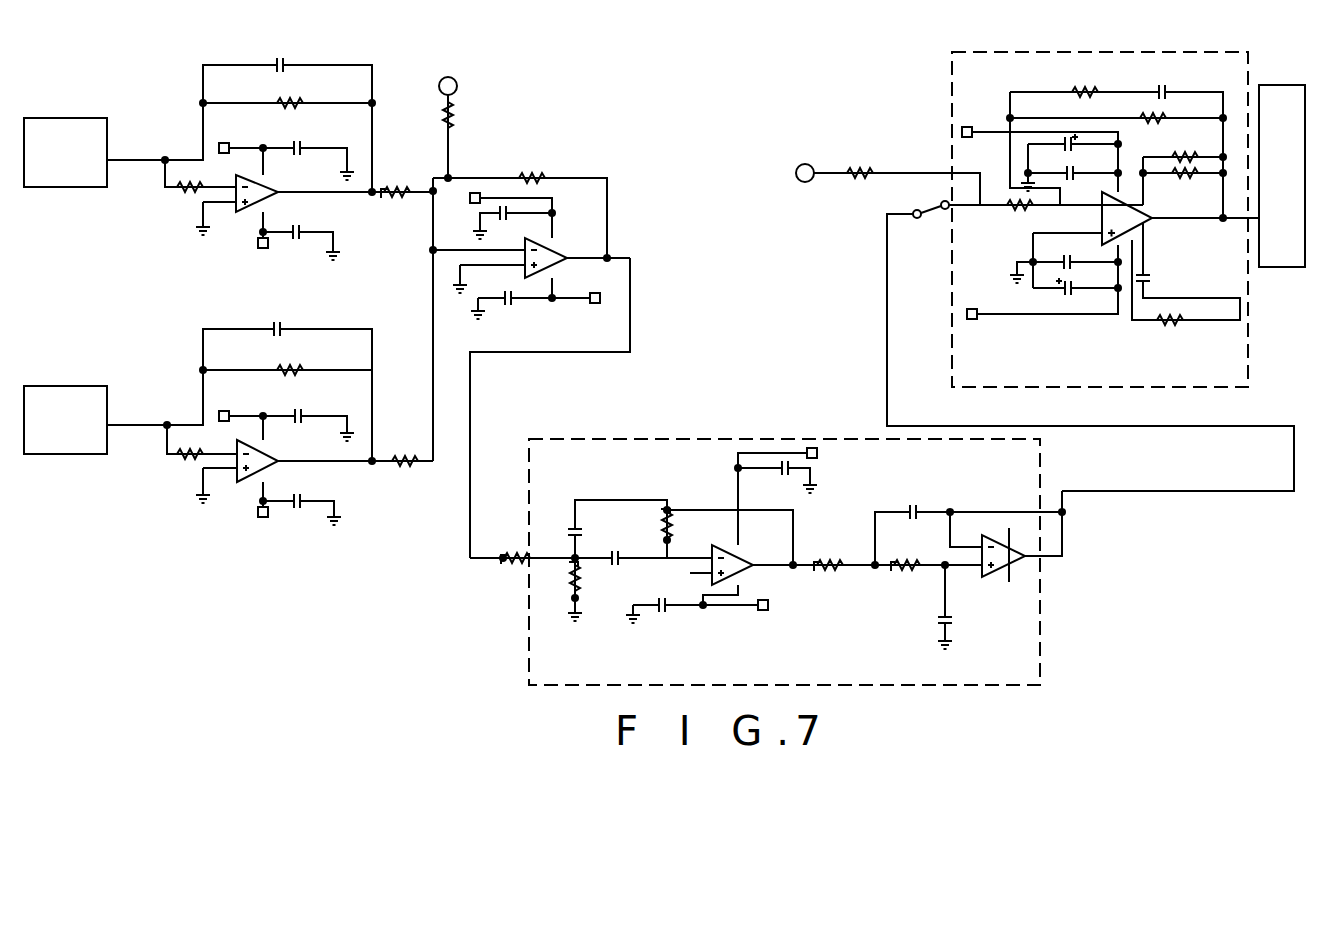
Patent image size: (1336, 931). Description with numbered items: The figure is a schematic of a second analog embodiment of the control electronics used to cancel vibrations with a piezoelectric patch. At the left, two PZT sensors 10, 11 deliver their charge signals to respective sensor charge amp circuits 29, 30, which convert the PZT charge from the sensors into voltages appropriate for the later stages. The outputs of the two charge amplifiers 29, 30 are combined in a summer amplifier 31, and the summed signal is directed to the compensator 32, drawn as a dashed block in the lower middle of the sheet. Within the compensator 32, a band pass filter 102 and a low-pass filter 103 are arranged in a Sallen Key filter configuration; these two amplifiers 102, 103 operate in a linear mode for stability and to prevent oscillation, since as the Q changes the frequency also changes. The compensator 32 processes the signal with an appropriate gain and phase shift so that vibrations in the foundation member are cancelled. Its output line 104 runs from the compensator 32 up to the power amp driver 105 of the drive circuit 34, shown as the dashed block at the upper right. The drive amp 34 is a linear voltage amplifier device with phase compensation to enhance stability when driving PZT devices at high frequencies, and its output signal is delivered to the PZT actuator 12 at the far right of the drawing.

The sensor 10 is at (77, 187).
The sensor 11 is at (63, 386).
The PZT actuator 12 is at (1284, 267).
The sensor charge amp circuit 29 is at (233, 213).
The sensor charge amp circuit 30 is at (246, 482).
The summer amplifier 31 is at (538, 238).
The compensator 32 is at (1040, 642).
The drive amp 34 is at (982, 50).
The band pass filter 102 is at (727, 548).
The low-pass filter 103 is at (990, 578).
The output line 104 is at (887, 368).
The power amp driver 105 is at (590, 259).